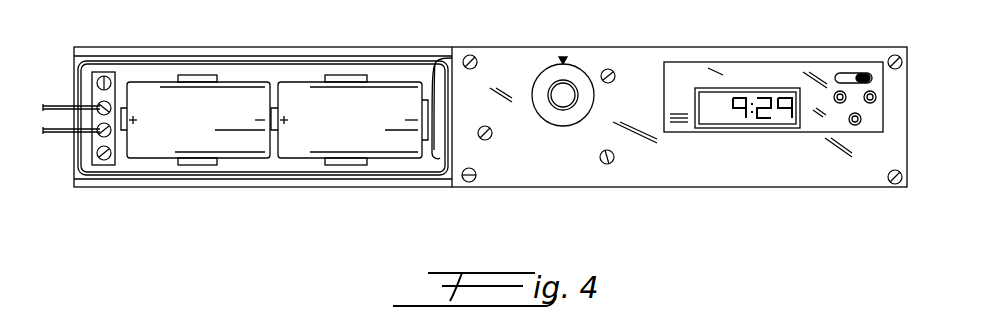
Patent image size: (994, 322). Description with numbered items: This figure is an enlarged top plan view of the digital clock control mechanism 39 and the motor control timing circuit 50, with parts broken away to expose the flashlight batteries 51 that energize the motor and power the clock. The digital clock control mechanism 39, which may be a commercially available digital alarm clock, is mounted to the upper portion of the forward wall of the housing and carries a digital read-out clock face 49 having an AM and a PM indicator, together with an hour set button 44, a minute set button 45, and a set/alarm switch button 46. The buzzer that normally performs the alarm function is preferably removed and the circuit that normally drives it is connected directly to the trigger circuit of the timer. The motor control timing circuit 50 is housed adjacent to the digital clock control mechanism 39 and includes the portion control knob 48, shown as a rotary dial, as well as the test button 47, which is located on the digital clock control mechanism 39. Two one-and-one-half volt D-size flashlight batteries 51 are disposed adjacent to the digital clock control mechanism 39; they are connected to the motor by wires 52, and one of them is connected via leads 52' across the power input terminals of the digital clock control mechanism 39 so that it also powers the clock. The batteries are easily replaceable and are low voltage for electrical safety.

The digital clock control mechanism 39 is at (672, 150).
The hour set button 44 is at (838, 103).
The minute set button 45 is at (870, 103).
The set/alarm switch button 46 is at (868, 78).
The test button 47 is at (855, 125).
The portion control knob 48 is at (563, 95).
The digital read-out clock face 49 is at (715, 118).
The motor control timing circuit 50 is at (586, 45).
The flashlight batteries 51 is at (163, 135).
The wires 52 is at (71, 120).
The leads 52' is at (417, 118).